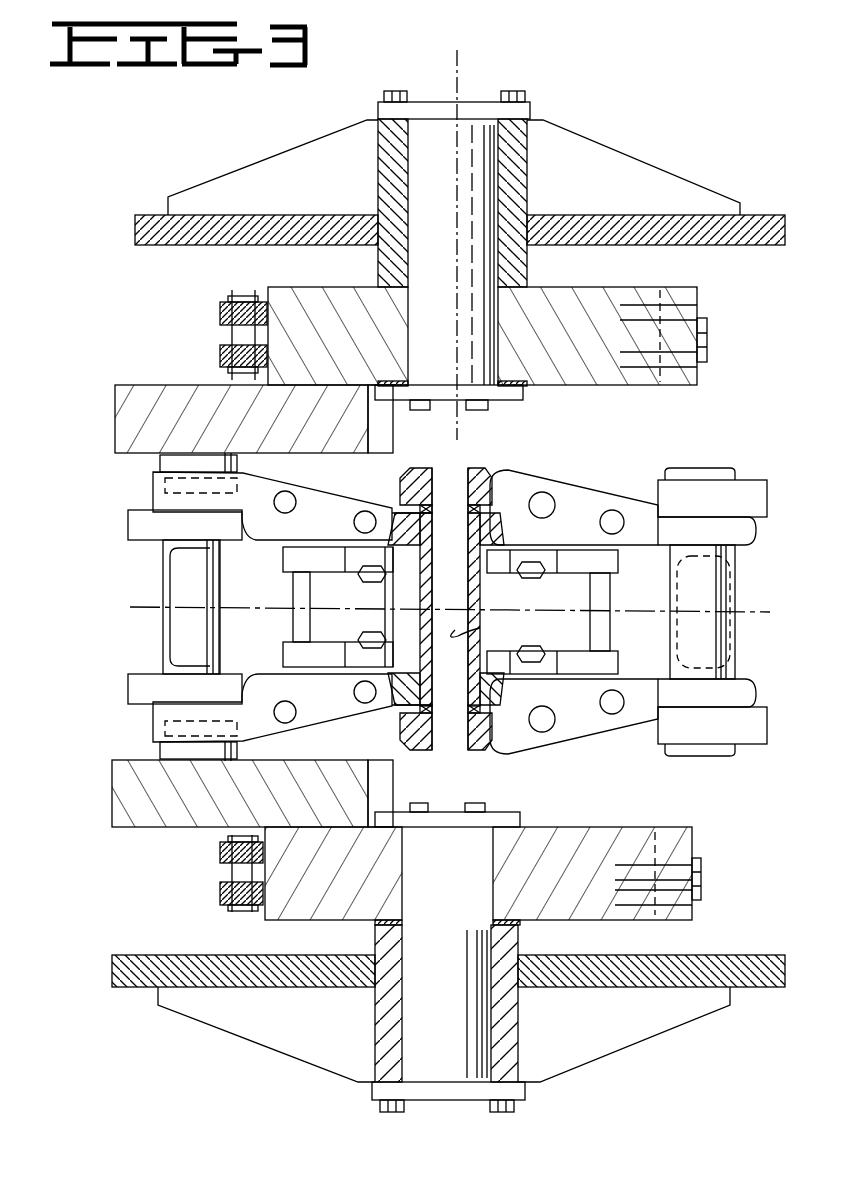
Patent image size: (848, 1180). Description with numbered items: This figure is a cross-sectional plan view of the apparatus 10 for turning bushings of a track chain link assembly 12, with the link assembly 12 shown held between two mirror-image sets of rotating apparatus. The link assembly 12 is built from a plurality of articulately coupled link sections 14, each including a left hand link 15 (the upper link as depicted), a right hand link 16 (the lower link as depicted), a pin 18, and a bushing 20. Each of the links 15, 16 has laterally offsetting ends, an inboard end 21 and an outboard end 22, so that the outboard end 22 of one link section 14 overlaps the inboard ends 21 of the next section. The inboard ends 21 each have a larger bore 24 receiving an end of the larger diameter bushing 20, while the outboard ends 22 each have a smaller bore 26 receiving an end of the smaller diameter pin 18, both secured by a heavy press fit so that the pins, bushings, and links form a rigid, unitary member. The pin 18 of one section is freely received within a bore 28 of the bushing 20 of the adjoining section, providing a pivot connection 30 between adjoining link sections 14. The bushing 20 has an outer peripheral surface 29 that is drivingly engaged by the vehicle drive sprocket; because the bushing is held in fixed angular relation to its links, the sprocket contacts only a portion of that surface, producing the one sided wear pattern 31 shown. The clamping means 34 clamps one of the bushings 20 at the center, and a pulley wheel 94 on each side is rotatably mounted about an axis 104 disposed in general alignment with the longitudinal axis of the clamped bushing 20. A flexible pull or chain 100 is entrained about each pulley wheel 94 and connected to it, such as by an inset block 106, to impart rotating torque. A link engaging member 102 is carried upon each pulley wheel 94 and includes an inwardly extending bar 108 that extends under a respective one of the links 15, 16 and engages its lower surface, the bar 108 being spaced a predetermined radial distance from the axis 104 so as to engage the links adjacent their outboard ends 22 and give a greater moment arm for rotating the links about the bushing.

The apparatus 10 is at (108, 282).
The track chain link assembly 12 is at (744, 466).
The link section 14 is at (560, 488).
The left hand link 15 is at (336, 516).
The right hand link 16 is at (333, 714).
The pin 18 is at (465, 567).
The bushing 20 is at (150, 555).
The inboard end 21 is at (500, 515).
The outboard end 22 is at (155, 480).
The larger bore 24 is at (392, 700).
The smaller bore 26 is at (443, 468).
The bore of the bushing 28 is at (480, 628).
The outer peripheral surface 29 is at (163, 622).
The pivot connection 30 is at (470, 590).
The one sided wear pattern 31 is at (204, 593).
The clamping means 34 is at (278, 612).
The pulley wheel 94 is at (583, 385).
The flexible pull or chain 100 is at (220, 312).
The link engaging member 102 is at (115, 405).
The axis 104 is at (457, 78).
The inset block 106 is at (707, 340).
The bar 108 is at (160, 462).